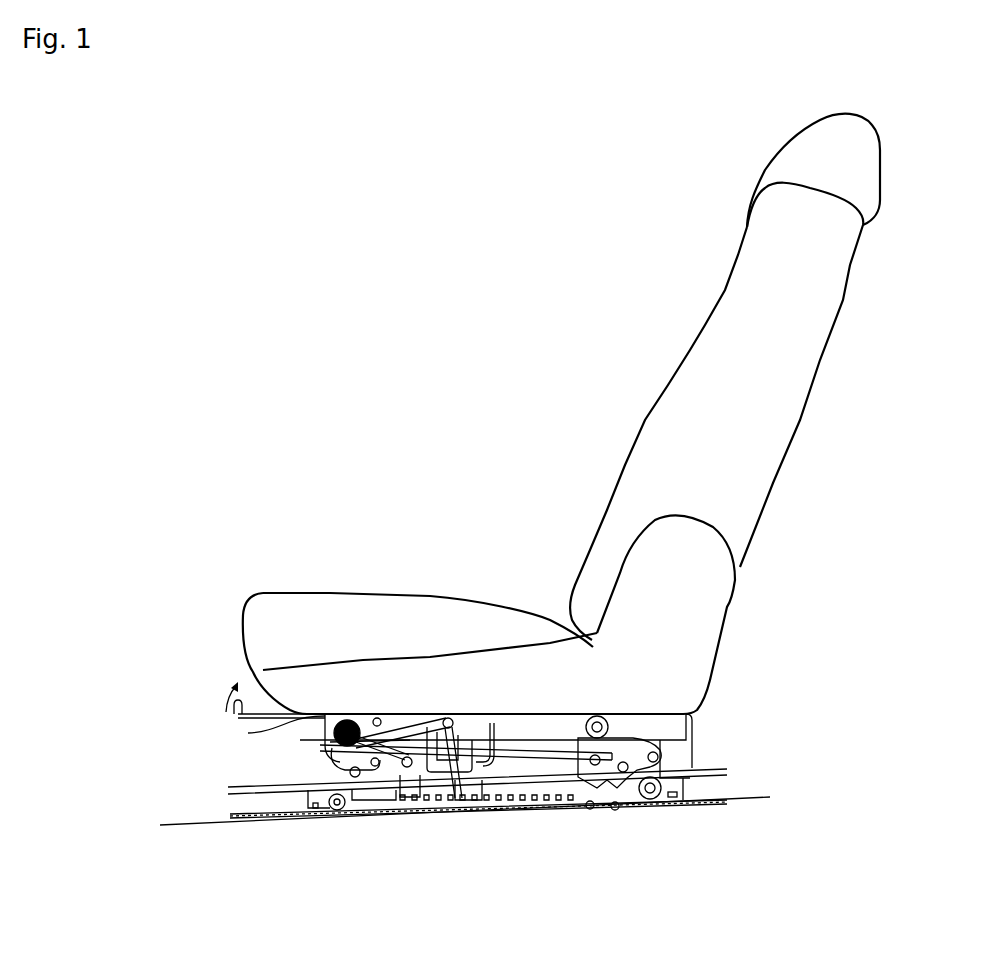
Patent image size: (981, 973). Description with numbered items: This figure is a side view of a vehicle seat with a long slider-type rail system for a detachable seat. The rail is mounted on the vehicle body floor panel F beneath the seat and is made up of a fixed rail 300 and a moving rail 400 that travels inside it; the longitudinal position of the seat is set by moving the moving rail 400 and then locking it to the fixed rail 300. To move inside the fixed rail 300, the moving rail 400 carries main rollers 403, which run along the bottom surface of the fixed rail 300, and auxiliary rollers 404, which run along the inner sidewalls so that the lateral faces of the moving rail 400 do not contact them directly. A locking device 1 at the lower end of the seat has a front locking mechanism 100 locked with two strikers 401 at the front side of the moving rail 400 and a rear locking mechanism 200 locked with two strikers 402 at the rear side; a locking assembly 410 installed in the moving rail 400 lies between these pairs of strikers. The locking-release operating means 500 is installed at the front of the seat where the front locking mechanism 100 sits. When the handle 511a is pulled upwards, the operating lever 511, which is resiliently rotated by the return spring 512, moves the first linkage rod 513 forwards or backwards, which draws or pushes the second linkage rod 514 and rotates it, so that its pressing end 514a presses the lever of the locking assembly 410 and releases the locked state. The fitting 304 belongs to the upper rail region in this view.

The locking device 1 is at (702, 722).
The front locking mechanism 100 is at (340, 808).
The rear locking mechanism 200 is at (640, 808).
The fixed rail 300 is at (720, 758).
The upper rail bracket 304 is at (477, 804).
The moving rail 400 is at (694, 806).
The strikers 401 is at (392, 797).
The strikers 402 is at (615, 810).
The main rollers 403 is at (333, 810).
The auxiliary rollers 404 is at (310, 818).
The locking assembly 410 is at (517, 808).
The locking-release operating means 500 is at (228, 720).
The operating lever 511 is at (320, 748).
The handle 511a is at (278, 720).
The return spring 512 is at (367, 720).
The first linkage rod 513 is at (410, 722).
The second linkage rod 514 is at (470, 760).
The pressing end 514a is at (412, 800).
The vehicle body floor panel F is at (690, 790).